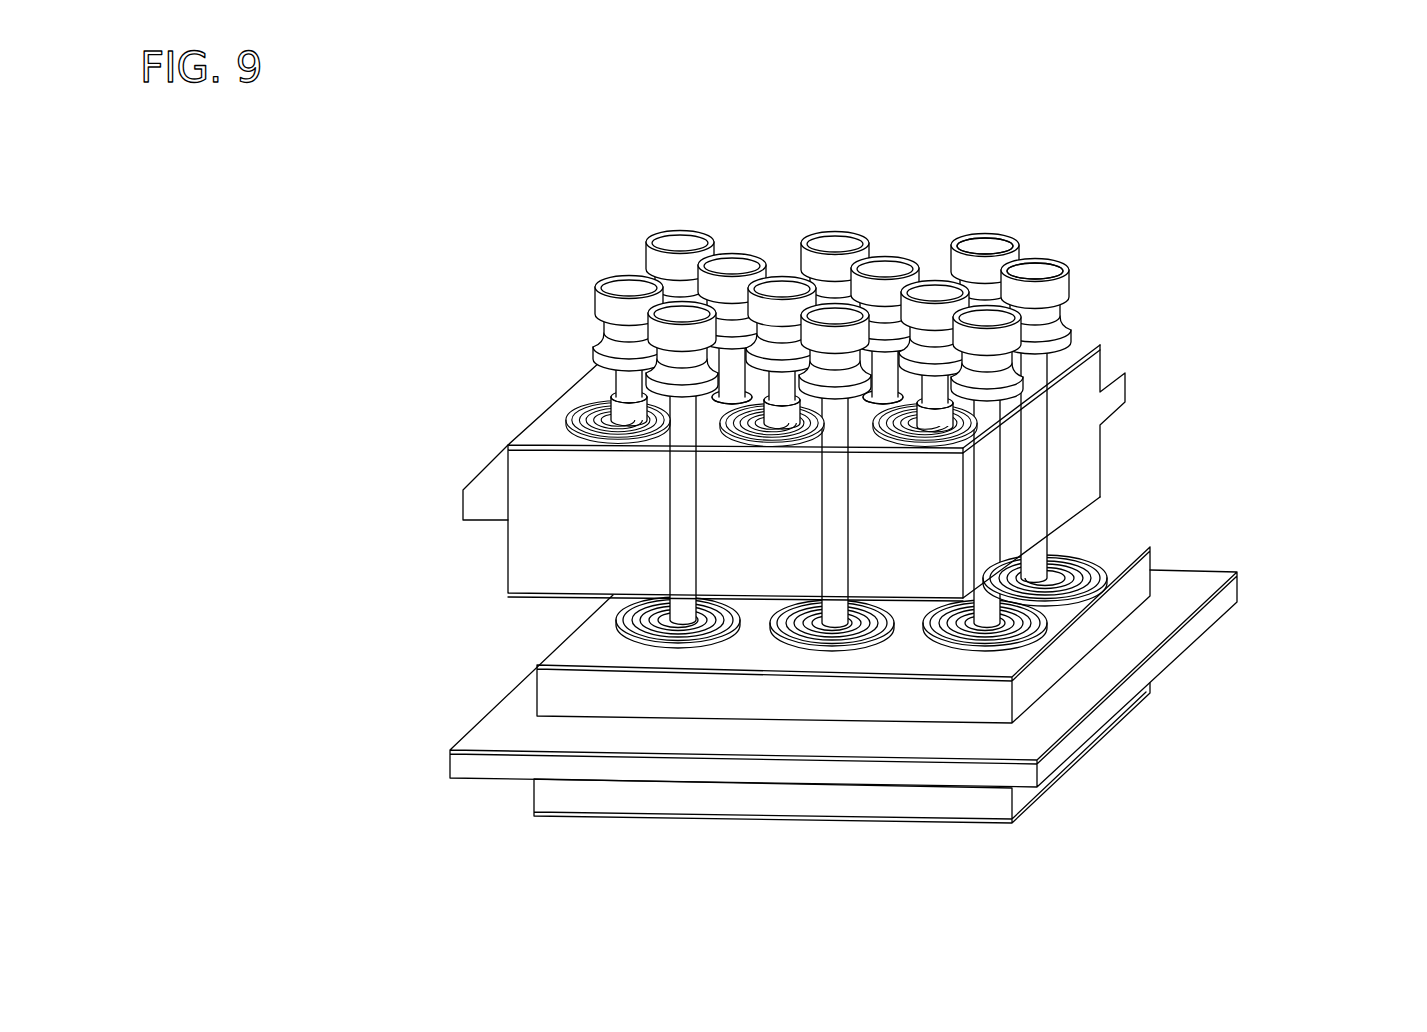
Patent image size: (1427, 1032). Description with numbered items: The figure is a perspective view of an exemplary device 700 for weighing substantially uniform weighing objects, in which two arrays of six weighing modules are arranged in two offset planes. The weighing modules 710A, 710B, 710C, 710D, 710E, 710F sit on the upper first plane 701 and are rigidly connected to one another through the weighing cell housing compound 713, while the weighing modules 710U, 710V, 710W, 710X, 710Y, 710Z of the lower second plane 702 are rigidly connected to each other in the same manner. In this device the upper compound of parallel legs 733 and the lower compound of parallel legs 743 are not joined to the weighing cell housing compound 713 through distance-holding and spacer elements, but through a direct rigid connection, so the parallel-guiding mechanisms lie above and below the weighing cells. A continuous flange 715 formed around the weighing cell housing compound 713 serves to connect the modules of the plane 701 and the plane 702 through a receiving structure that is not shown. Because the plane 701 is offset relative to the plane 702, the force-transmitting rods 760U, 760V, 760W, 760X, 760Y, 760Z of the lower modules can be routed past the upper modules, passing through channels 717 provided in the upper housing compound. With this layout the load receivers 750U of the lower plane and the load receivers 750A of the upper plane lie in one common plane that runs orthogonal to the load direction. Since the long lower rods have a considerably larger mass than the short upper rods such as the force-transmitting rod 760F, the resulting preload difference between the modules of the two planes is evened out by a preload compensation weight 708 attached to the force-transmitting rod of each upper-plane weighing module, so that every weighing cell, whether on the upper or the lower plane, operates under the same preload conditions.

The device for weighing 700 is at (535, 312).
The first plane 701 is at (1152, 447).
The second plane 702 is at (1210, 665).
The preload compensation weight 708 is at (627, 413).
The weighing cell housing compound 713 is at (1073, 418).
The continuous flange 715 is at (493, 475).
The channels 717 is at (665, 507).
The upper compound of parallel legs 733 is at (1060, 363).
The lower compound of parallel legs 743 is at (1090, 502).
The load receiver 750A is at (987, 270).
The load receiver 750U is at (1050, 292).
The force-transmitting rod 760F is at (627, 383).
The force-transmitting rod 760U is at (1039, 503).
The force-transmitting rod 760V is at (982, 483).
The force-transmitting rod 760W is at (885, 380).
The force-transmitting rod 760X is at (828, 535).
The force-transmitting rod 760Y is at (727, 380).
The force-transmitting rod 760Z is at (682, 538).
The weighing module 710A is at (985, 250).
The weighing module 710B is at (886, 272).
The weighing module 710C is at (835, 247).
The weighing module 710D is at (733, 269).
The weighing module 710E is at (680, 246).
The weighing module 710F is at (629, 290).
The weighing module 710U is at (1038, 273).
The weighing module 710V is at (987, 320).
The weighing module 710W is at (935, 296).
The weighing module 710X is at (835, 318).
The weighing module 710Y is at (782, 292).
The weighing module 710Z is at (681, 316).